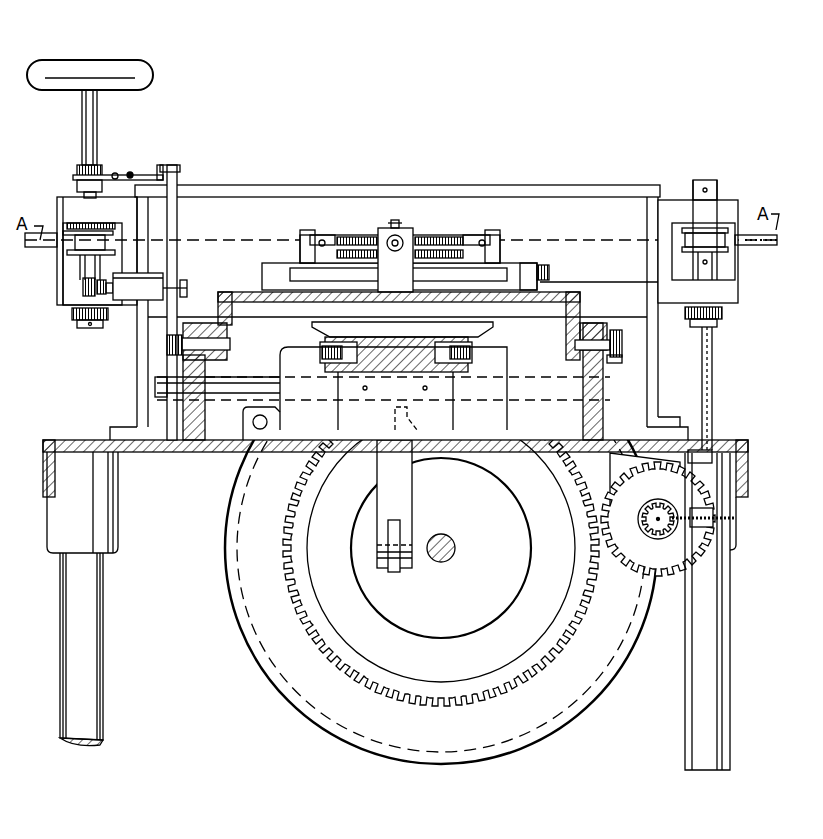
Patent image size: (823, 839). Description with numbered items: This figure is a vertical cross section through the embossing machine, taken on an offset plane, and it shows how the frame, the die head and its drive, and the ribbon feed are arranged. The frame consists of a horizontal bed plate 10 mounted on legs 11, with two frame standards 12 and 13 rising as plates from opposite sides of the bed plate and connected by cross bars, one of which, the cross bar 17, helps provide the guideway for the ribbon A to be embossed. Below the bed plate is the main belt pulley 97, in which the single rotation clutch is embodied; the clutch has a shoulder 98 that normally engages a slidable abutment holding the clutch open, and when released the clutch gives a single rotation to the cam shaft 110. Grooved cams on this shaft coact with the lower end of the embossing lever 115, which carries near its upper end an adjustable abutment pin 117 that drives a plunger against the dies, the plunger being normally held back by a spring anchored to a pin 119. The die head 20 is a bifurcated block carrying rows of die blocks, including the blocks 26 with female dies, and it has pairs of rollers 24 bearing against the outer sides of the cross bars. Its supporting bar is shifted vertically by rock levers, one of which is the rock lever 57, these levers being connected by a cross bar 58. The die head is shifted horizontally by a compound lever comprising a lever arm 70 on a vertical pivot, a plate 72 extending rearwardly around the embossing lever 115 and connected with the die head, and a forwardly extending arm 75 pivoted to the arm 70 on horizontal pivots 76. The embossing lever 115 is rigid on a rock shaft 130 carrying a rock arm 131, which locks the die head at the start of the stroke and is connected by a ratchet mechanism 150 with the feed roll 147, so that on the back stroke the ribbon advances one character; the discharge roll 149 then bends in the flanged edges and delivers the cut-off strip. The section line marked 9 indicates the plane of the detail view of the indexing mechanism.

The section line 9 is at (64, 303).
The bed plate 10 is at (170, 445).
The legs 11 is at (95, 630).
The frame standard 12 is at (138, 391).
The frame standard 13 is at (650, 400).
The cross bar 17 is at (397, 202).
The die head 20 is at (405, 226).
The rollers 24 is at (308, 232).
The die blocks 26 is at (440, 232).
The rock lever 57 is at (622, 355).
The cross bar 58 is at (399, 326).
The lever arm 70 is at (470, 365).
The plate 72 is at (450, 324).
The arm 75 is at (560, 345).
The horizontal pivots 76 is at (325, 343).
The main belt pulley 97 is at (258, 668).
The shoulder 98 is at (393, 415).
The cam shaft 110 is at (455, 548).
The embossing lever 115 is at (425, 508).
The adjustable abutment pin 117 is at (390, 240).
The pin 119 is at (443, 575).
The rock shaft 130 is at (250, 380).
The rock arm 131 is at (177, 262).
The feed roll 147 is at (68, 254).
The discharge roll 149 is at (725, 250).
The ratchet mechanism 150 is at (115, 170).